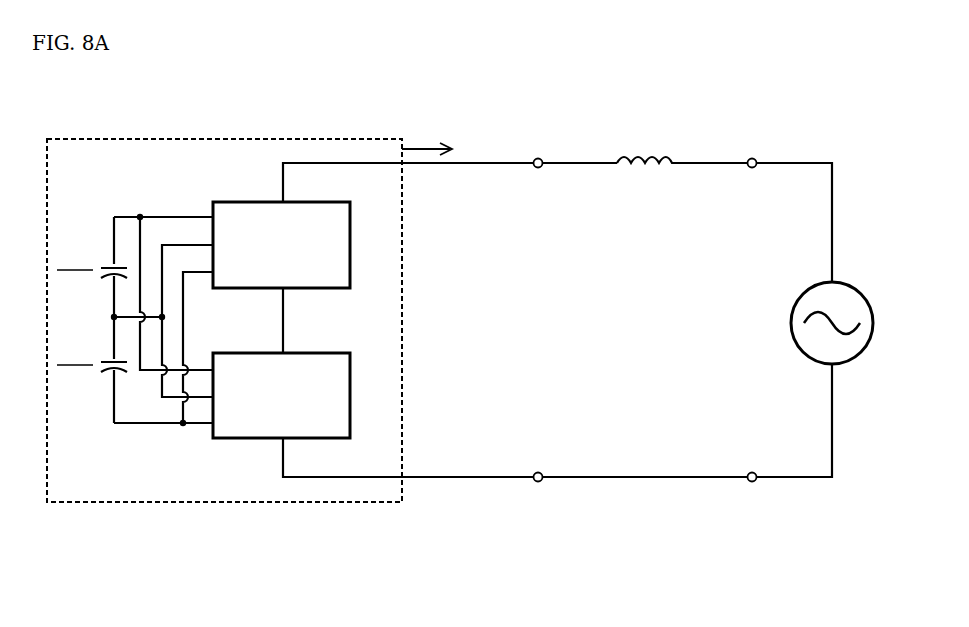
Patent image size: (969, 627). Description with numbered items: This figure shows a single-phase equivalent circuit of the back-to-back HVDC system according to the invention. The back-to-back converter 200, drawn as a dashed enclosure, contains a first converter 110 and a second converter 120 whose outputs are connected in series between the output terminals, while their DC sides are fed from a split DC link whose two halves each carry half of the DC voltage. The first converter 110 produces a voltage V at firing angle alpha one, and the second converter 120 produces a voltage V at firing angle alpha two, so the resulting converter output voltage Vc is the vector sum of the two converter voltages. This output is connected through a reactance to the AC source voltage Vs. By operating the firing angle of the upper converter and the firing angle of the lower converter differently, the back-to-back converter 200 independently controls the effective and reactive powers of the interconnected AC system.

The back-to-back converter 200 is at (138, 139).
The first converter 110 is at (238, 202).
The second converter 120 is at (238, 440).